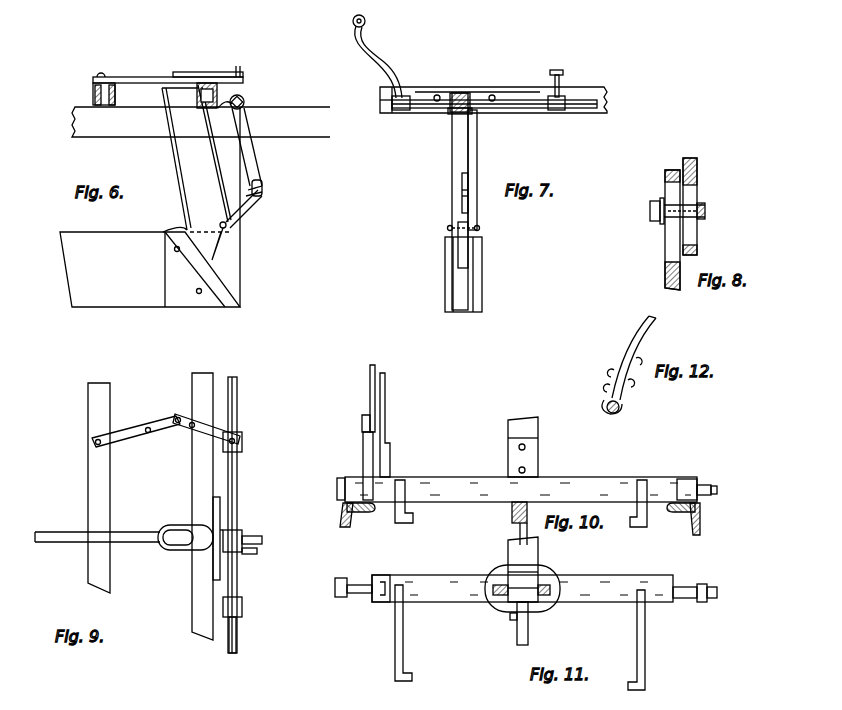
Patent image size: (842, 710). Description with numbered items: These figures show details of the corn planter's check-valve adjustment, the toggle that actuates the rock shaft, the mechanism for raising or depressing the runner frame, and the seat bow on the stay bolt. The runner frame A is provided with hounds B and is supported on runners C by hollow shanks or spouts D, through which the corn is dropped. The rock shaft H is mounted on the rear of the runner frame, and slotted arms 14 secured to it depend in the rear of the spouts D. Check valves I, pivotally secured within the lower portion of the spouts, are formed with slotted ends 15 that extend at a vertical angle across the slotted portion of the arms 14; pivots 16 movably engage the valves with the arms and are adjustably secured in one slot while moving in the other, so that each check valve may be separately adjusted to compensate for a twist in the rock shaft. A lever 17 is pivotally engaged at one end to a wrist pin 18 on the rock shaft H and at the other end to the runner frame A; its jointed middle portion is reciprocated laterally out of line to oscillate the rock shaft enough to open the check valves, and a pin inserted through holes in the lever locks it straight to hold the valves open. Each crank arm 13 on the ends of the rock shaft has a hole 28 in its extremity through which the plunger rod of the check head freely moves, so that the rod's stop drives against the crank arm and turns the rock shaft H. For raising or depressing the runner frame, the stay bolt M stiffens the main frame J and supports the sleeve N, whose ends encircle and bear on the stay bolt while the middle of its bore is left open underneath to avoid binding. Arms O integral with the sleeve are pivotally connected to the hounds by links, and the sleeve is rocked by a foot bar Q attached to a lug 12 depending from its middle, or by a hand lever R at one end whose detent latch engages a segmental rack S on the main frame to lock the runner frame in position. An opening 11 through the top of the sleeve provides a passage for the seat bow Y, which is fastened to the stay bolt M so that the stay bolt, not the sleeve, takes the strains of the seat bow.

In FIG. 11, the opening 11 is at (543, 572).
In FIG. 10, the lug 12 is at (512, 513).
In FIG. 11, the lug 12 is at (510, 617).
In FIG. 7, the crank arm 13 is at (366, 60).
In FIG. 9, the crank arm 13 is at (236, 630).
In FIG. 6, the slotted arm 14 is at (251, 152).
In FIG. 7, the slotted arm 14 is at (477, 157).
In FIG. 8, the slotted arm 14 is at (697, 172).
In FIG. 9, the slotted arm 14 is at (249, 536).
In FIG. 6, the slotted end 15 is at (262, 185).
In FIG. 7, the slotted end 15 is at (462, 186).
In FIG. 8, the slotted end 15 is at (667, 262).
In FIG. 9, the slotted end 15 is at (256, 545).
In FIG. 6, the pivot 16 is at (263, 193).
In FIG. 7, the pivot 16 is at (464, 194).
In FIG. 8, the pivot 16 is at (705, 215).
In FIG. 9, the pivot 16 is at (250, 554).
In FIG. 6, the lever 17 is at (138, 77).
In FIG. 7, the lever 17 is at (553, 80).
In FIG. 9, the lever 17 is at (136, 427).
In FIG. 6, the wrist pin 18 is at (241, 80).
In FIG. 7, the wrist pin 18 is at (565, 96).
In FIG. 9, the wrist pin 18 is at (243, 436).
In FIG. 7, the hole 28 is at (353, 21).
In FIG. 6, the runner frame A is at (93, 96).
In FIG. 7, the runner frame A is at (596, 88).
In FIG. 9, the runner frame A is at (150, 506).
In FIG. 6, the hounds B is at (201, 122).
In FIG. 6, the runner C is at (150, 207).
In FIG. 9, the runner C is at (124, 534).
In FIG. 6, the hollow shank or spout D is at (196, 195).
In FIG. 7, the hollow shank or spout D is at (452, 151).
In FIG. 9, the hollow shank or spout D is at (189, 538).
In FIG. 6, the rock shaft H is at (245, 100).
In FIG. 7, the rock shaft H is at (523, 108).
In FIG. 9, the rock shaft H is at (237, 475).
In FIG. 6, the check valve I is at (228, 236).
In FIG. 7, the check valve I is at (460, 244).
In FIG. 8, the check valve I is at (672, 172).
In FIG. 10, the main frame J is at (690, 530).
In FIG. 12, the stay bolt M is at (621, 411).
In FIG. 10, the stay bolt M is at (710, 485).
In FIG. 11, the stay bolt M is at (352, 578).
In FIG. 12, the sleeve N is at (605, 406).
In FIG. 10, the sleeve N is at (517, 489).
In FIG. 11, the sleeve N is at (522, 588).
In FIG. 10, the arm O is at (395, 513).
In FIG. 11, the arm O is at (403, 640).
In FIG. 10, the foot bar Q is at (528, 513).
In FIG. 11, the foot bar Q is at (528, 625).
In FIG. 10, the hand lever R is at (385, 380).
In FIG. 10, the segmental rack S is at (363, 456).
In FIG. 12, the seat bow Y is at (640, 336).
In FIG. 10, the seat bow Y is at (521, 428).
In FIG. 11, the seat bow Y is at (523, 569).